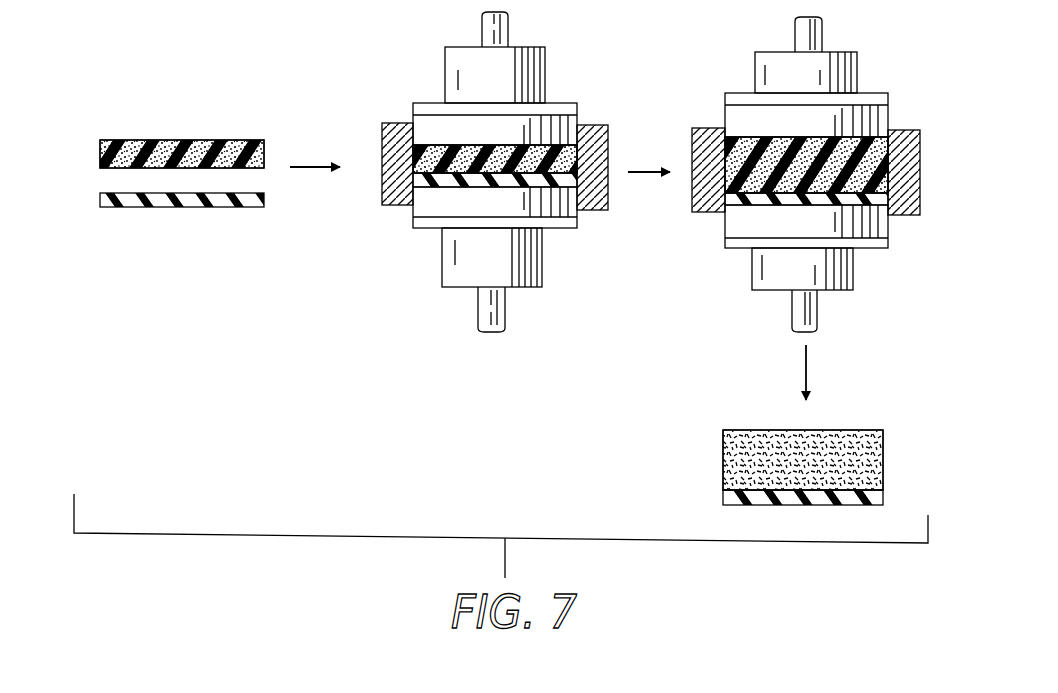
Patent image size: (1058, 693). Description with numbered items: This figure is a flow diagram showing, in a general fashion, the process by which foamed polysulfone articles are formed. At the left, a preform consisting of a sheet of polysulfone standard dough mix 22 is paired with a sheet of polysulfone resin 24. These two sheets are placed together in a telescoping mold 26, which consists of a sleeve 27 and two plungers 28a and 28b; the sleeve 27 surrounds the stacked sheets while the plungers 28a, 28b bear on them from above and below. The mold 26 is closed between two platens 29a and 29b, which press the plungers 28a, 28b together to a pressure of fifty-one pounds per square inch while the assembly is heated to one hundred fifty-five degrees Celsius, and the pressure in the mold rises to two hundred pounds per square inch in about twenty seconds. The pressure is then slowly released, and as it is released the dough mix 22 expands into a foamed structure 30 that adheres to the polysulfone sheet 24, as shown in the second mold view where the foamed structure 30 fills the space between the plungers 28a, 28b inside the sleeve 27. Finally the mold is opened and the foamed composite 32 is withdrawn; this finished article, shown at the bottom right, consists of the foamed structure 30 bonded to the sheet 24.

The sheet of polysulfone standard dough mix 22 is at (227, 100).
The sheet of polysulfone resin 24 is at (203, 207).
The telescoping mold 26 is at (372, 137).
The sleeve 27 is at (593, 137).
The plunger 28a is at (425, 127).
The plunger 28b is at (427, 203).
The platen 29a is at (438, 103).
The platen 29b is at (757, 262).
The foamed structure 30 is at (888, 113).
The foamed composite 32 is at (714, 440).